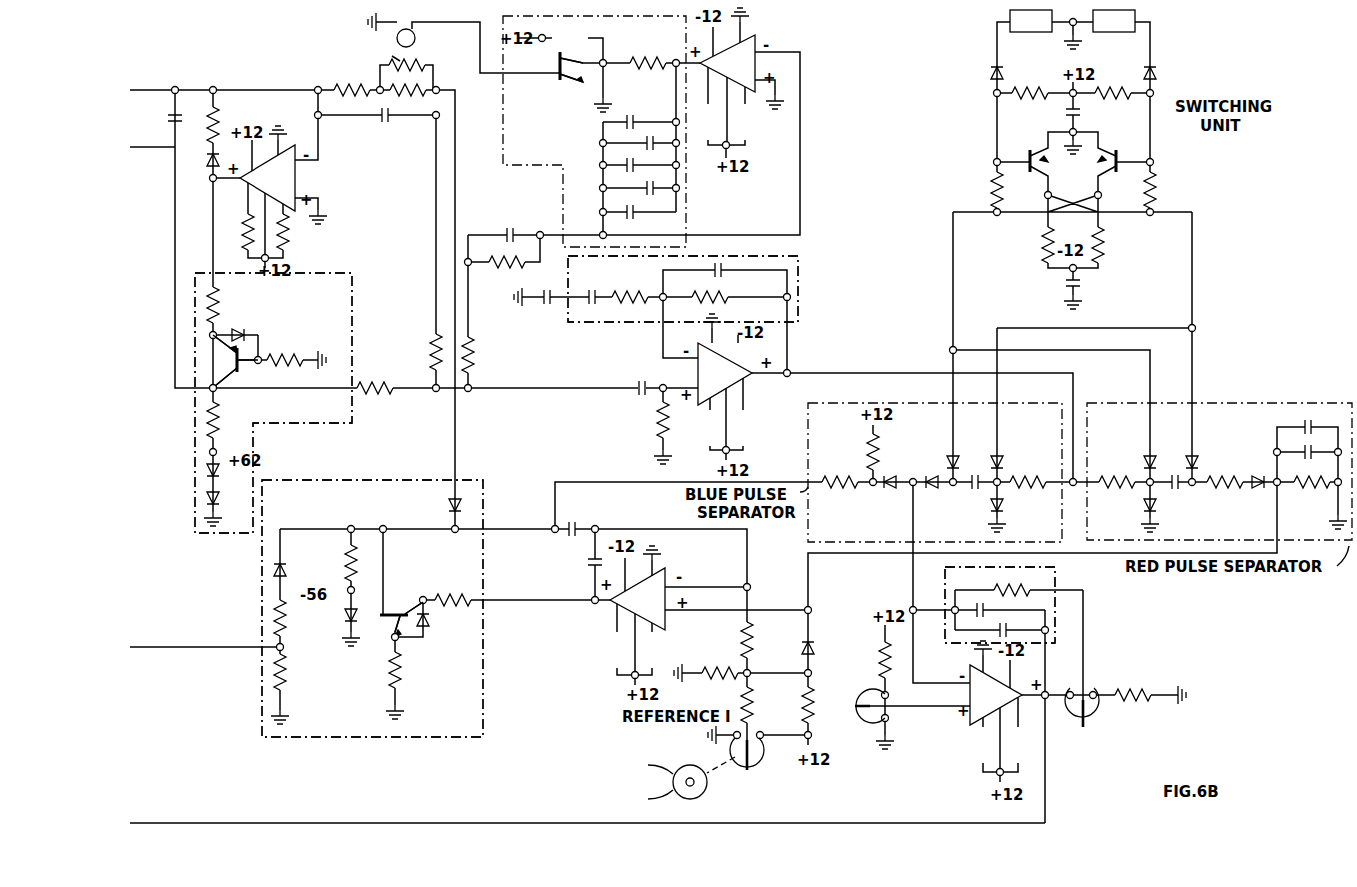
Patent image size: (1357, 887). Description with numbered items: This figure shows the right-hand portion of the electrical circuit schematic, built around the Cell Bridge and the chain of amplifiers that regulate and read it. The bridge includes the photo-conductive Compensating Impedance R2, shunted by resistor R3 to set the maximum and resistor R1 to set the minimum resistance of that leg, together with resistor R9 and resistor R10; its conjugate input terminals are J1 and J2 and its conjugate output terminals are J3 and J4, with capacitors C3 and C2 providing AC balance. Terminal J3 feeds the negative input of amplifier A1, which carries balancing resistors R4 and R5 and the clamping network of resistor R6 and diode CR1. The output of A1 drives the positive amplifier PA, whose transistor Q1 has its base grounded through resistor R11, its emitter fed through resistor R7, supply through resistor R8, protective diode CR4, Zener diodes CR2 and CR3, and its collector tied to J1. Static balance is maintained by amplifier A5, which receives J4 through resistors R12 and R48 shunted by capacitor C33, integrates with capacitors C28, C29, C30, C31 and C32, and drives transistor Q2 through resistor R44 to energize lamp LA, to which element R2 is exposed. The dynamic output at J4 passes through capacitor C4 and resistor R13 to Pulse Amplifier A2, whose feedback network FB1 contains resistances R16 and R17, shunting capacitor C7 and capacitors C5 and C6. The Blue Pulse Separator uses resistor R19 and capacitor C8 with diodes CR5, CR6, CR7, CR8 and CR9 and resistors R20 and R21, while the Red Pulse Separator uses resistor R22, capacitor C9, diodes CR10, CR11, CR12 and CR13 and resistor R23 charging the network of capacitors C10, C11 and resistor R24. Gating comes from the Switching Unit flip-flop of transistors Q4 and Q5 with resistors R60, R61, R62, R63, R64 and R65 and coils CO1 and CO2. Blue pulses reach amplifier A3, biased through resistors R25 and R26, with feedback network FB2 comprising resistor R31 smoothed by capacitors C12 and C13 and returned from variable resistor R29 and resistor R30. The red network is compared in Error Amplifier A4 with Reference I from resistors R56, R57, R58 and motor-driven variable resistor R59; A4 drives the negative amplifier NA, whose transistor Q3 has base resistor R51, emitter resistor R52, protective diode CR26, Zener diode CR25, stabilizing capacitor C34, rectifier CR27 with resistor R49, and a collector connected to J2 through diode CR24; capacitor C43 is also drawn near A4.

The capacitor C3 is at (155, 113).
The conjugate output terminal J3 is at (222, 81).
The resistor R6 is at (228, 121).
The diode CR1 is at (208, 164).
The high-gain operational amplifier A1 is at (278, 185).
The resistor R4 is at (236, 230).
The resistor R5 is at (297, 232).
The resistor R1 is at (349, 81).
The resistor R3 is at (408, 99).
The photo-conductive element R2 is at (411, 56).
The conjugate input terminal J2 is at (440, 86).
The capacitor C2 is at (372, 121).
The lamp LA is at (391, 39).
The resistor R10 is at (420, 343).
The transistor Q2 is at (542, 71).
The resistor R44 is at (644, 53).
The high-gain operational amplifier A5 is at (744, 71).
The capacitor C28 is at (647, 113).
The capacitor C29 is at (631, 139).
The capacitor C30 is at (648, 161).
The capacitor C31 is at (630, 184).
The capacitor C32 is at (647, 220).
The capacitor C33 is at (509, 225).
The resistor R48 is at (520, 270).
The resistor R12 is at (490, 355).
The feedback network FB1 is at (636, 280).
The capacitor C6 is at (548, 306).
The capacitor C5 is at (587, 306).
The resistance R16 is at (628, 307).
The resistance R17 is at (705, 290).
The shunting capacitor C7 is at (733, 277).
The high-gain operational amplifier A2 is at (730, 381).
The capacitor C4 is at (638, 378).
The resistor R13 is at (654, 420).
The resistor R9 is at (375, 377).
The conjugate output terminal J4 is at (428, 400).
The positive amplifier PA is at (306, 413).
The resistor R7 is at (227, 305).
The protective diode CR4 is at (254, 326).
The transistor Q1 is at (218, 369).
The resistor R11 is at (285, 350).
The conjugate input terminal J1 is at (224, 397).
The resistor R8 is at (227, 420).
The Zener diode CR3 is at (204, 478).
The Zener diode CR2 is at (204, 503).
The diode CR24 is at (430, 505).
The negative amplifier NA is at (346, 723).
The rectifier CR27 is at (302, 567).
The resistor R49 is at (297, 645).
The Zener diode CR25 is at (327, 584).
The transistor Q3 is at (408, 595).
The resistor R52 is at (451, 589).
The protective diode CR26 is at (445, 627).
The resistor R51 is at (413, 670).
The capacitor C34 is at (588, 522).
The capacitor C43 is at (577, 563).
The Error Amplifier A4 is at (650, 607).
The resistor R56 is at (714, 661).
The resistor R58 is at (765, 672).
The motor-driven variable resistor R59 is at (762, 762).
The resistor R57 is at (825, 682).
The resistor R20 is at (852, 446).
The resistor R21 is at (835, 471).
The diode CR9 is at (874, 492).
The diode CR8 is at (932, 493).
The diode CR7 is at (934, 456).
The clamping diode CR6 is at (1014, 456).
The capacitor C8 is at (972, 493).
The clamping diode CR5 is at (1016, 514).
The resistor R19 is at (1031, 492).
The resistor R22 is at (1112, 492).
The clamping diode CR11 is at (1128, 453).
The clamping diode CR10 is at (1173, 511).
The capacitor C9 is at (1185, 491).
The diode CR12 is at (1213, 453).
The resistor R23 is at (1228, 492).
The diode CR13 is at (1253, 471).
The resistor R24 is at (1306, 492).
The capacitor C10 is at (1290, 420).
The capacitor C11 is at (1298, 446).
The coil CO1 is at (1031, 21).
The coil CO2 is at (1114, 21).
The resistor R64 is at (1019, 83).
The resistor R65 is at (1125, 83).
The transistor Q4 is at (1034, 146).
The transistor Q5 is at (1134, 146).
The resistor R62 is at (975, 189).
The resistor R63 is at (1170, 189).
The resistor R60 is at (1027, 245).
The resistor R61 is at (1104, 256).
The feedback network FB2 is at (980, 587).
The resistor R31 is at (1017, 581).
The capacitor C12 is at (997, 604).
The capacitor C13 is at (1021, 624).
The high-gain operational amplifier A3 is at (1002, 703).
The resistor R26 is at (867, 660).
The resistor R25 is at (858, 714).
The variable resistor R29 is at (1098, 711).
The resistor R30 is at (1134, 684).